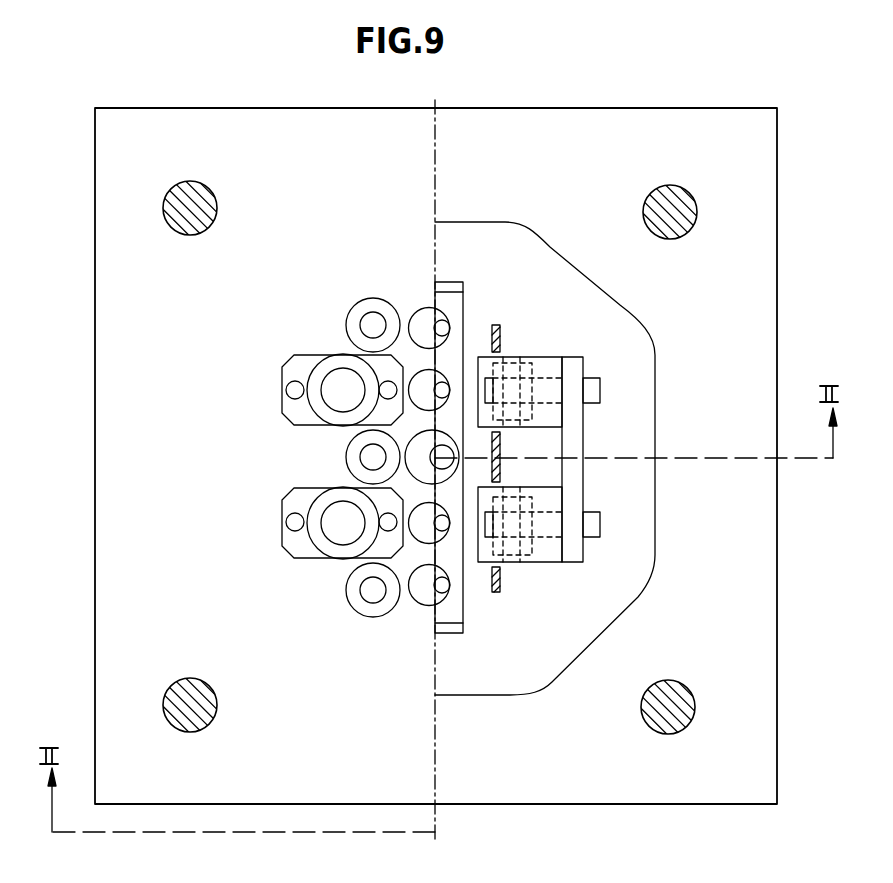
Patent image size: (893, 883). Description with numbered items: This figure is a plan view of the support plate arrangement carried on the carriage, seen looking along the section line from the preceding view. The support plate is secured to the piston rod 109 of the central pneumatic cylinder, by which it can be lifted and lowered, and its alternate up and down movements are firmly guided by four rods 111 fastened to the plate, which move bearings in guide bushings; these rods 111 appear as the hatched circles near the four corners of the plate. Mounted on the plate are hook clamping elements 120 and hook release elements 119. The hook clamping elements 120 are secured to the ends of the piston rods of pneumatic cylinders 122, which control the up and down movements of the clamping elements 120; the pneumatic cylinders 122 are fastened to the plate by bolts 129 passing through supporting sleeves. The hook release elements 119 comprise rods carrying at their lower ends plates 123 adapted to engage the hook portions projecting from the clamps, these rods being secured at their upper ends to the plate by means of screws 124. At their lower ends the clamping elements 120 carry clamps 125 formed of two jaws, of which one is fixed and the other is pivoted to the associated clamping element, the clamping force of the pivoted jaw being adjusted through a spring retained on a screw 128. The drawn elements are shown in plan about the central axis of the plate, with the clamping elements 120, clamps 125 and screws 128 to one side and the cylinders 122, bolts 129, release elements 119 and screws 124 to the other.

The piston rod 109 is at (437, 470).
The rods 111 is at (205, 193).
The release elements 119 is at (348, 605).
The hook clamping elements 120 is at (600, 356).
The pneumatic cylinders 122 is at (330, 505).
The plates 123 is at (499, 337).
The screws 124 is at (373, 322).
The clamps 125 is at (552, 455).
The screw 128 is at (597, 392).
The bolts 129 is at (380, 387).